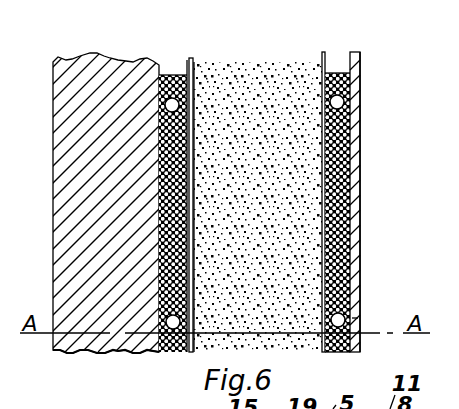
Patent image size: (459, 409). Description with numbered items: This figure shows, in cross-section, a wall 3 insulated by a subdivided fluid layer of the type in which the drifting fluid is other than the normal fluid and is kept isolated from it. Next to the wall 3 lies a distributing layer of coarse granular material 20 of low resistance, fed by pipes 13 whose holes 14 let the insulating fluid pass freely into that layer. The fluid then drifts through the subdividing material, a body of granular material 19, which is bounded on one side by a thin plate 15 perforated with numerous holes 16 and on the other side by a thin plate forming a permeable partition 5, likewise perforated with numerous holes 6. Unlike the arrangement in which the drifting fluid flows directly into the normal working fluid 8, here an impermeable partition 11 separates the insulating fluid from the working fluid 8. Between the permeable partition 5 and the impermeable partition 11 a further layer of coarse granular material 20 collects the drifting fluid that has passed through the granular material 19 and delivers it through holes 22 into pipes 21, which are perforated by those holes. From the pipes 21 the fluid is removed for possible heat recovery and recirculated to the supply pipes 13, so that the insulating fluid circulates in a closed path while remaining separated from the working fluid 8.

The wall 3 is at (58, 84).
The pipes 13 is at (161, 100).
The holes 14 is at (188, 72).
The thin plate 15 is at (192, 58).
The holes 16 is at (200, 78).
The granular material 19 is at (263, 60).
The permeable partition 5 is at (324, 52).
The holes 6 is at (331, 72).
The impermeable partition 11 is at (361, 61).
The normal working fluid 8 is at (373, 138).
The coarse granular material 20 is at (170, 74).
The pipes 21 is at (360, 318).
The holes 22 is at (338, 352).